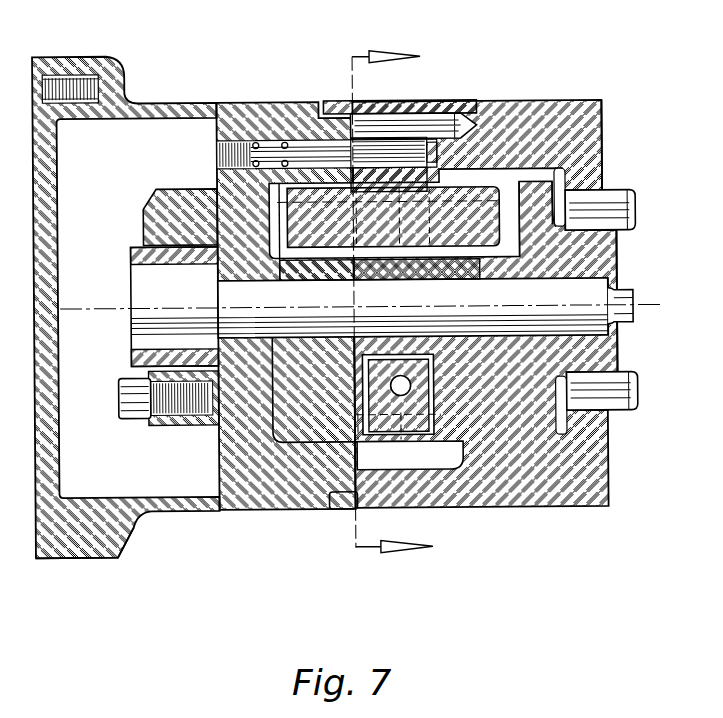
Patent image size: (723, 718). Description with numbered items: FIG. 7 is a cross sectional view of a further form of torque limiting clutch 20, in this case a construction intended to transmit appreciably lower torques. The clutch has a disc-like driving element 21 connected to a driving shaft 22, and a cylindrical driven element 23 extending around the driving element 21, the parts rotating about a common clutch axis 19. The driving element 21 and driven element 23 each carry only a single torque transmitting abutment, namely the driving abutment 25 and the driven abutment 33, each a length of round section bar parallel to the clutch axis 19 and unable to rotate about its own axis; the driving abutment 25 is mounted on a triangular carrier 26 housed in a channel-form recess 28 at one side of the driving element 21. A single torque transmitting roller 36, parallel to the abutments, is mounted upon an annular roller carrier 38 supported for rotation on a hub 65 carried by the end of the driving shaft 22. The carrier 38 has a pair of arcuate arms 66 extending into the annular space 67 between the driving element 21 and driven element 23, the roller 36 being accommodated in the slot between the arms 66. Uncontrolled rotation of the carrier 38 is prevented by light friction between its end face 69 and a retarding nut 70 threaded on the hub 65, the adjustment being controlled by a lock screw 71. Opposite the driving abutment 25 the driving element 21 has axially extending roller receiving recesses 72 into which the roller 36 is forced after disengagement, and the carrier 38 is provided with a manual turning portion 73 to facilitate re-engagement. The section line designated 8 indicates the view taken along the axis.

The section line 8- 8 is at (392, 300).
The clutch axis 19 is at (79, 306).
The torque limiting clutch 20 is at (503, 522).
The driving element 21 is at (600, 257).
The driving shaft 22 is at (592, 292).
The driven element 23 is at (578, 120).
The driving abutment 25 is at (389, 179).
The carrier 26 is at (289, 260).
The recess 28 is at (509, 214).
The driven abutment 33 is at (420, 128).
The torque transmitting roller 36 is at (481, 170).
The roller carrier 38 is at (253, 503).
The hub 65 is at (137, 358).
The arms 66 is at (372, 106).
The annular space 67 is at (484, 167).
The end face 69 is at (218, 172).
The retarding nut 70 is at (158, 204).
The lock screw 71 is at (133, 409).
The roller receiving recesses 72 is at (418, 438).
The manual turning portion 73 is at (81, 549).